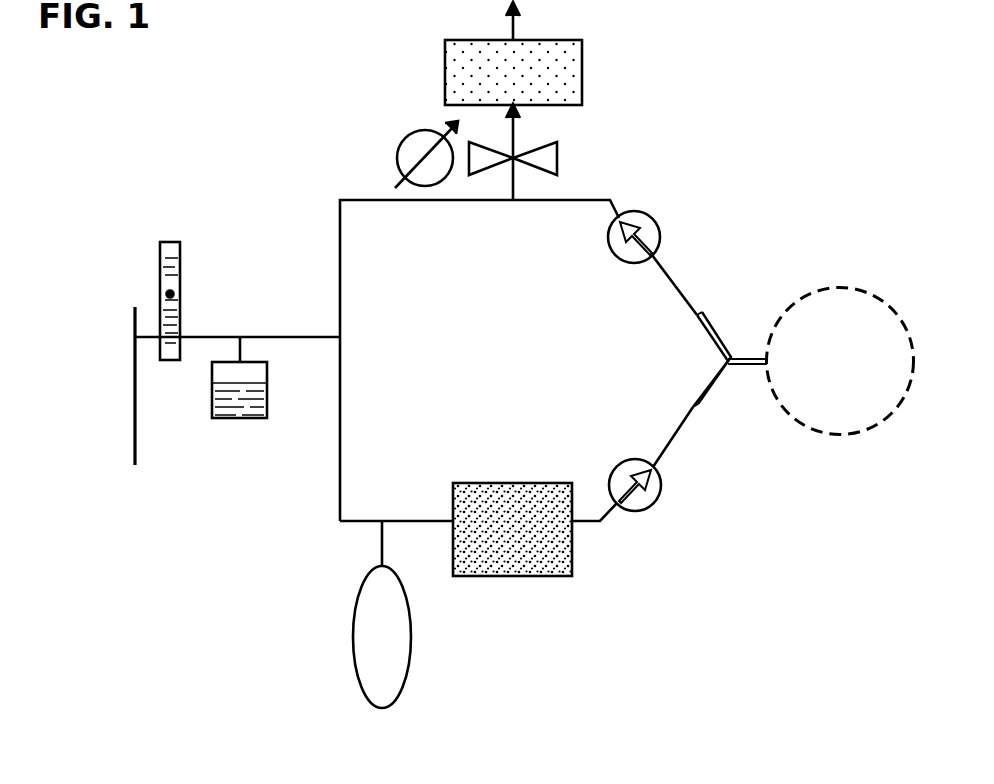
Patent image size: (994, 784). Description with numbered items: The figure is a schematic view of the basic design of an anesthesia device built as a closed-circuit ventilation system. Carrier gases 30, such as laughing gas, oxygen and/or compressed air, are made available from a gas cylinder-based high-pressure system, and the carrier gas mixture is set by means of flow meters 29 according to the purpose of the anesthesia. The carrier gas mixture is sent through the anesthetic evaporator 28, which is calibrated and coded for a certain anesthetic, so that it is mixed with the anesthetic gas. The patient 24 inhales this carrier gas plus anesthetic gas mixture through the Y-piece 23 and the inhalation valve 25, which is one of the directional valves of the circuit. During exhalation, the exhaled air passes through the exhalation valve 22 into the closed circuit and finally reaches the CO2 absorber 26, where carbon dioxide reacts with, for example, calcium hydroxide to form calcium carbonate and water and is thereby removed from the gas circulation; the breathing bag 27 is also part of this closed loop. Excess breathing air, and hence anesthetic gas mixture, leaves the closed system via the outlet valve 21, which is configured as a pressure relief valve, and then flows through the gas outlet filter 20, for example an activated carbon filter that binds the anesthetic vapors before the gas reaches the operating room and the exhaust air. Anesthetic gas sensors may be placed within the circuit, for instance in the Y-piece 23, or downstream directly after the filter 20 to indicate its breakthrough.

The gas outlet filter 20 is at (582, 62).
The outlet valve 21 is at (557, 152).
The exhalation valve 22 is at (657, 222).
The Y-piece 23 is at (700, 335).
The patient 24 is at (825, 375).
The inhalation valve 25 is at (657, 493).
The CO2 absorber 26 is at (508, 576).
The breathing bag 27 is at (354, 633).
The anesthetic evaporator 28 is at (228, 418).
The flow meters 29 is at (180, 248).
The carrier gases 30 is at (126, 324).